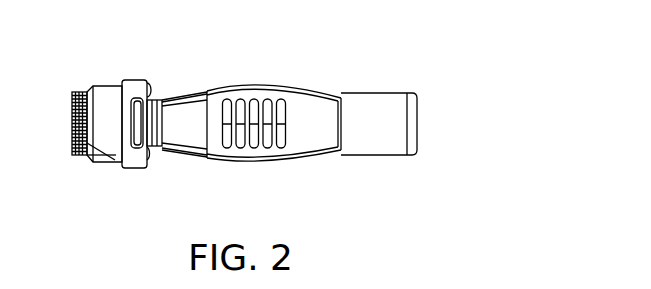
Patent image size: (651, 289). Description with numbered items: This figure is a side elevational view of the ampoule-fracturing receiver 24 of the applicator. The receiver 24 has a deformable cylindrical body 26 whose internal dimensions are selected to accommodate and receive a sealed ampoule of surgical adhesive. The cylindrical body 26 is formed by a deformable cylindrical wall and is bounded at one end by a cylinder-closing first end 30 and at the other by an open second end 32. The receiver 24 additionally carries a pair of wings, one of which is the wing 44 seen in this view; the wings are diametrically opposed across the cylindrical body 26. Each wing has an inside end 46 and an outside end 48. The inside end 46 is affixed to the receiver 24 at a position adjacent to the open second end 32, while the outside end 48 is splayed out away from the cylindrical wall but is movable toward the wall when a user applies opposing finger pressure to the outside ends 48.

The receiver 24 is at (240, 114).
The deformable cylindrical body 26 is at (398, 92).
The cylinder-closing first end 30 is at (412, 104).
The open second end 32 is at (72, 128).
The wing 44 is at (293, 124).
The inside end 46 is at (142, 110).
The outside end 48 is at (342, 113).